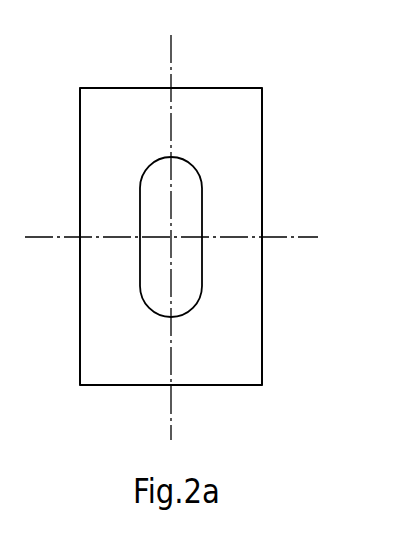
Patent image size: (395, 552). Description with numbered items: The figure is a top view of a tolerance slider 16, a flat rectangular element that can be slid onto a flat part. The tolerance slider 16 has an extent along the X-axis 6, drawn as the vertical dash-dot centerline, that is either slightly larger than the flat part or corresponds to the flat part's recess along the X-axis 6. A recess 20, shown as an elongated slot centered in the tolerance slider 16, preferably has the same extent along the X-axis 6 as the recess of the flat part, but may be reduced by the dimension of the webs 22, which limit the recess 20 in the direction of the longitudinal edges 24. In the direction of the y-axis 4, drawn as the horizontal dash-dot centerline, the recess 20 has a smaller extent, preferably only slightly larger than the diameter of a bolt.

The tolerance slider 16 is at (245, 62).
The recess 20 is at (183, 260).
The webs 22 is at (150, 114).
The longitudinal edges 24 is at (107, 86).
The y-axis 4 is at (302, 232).
The X-axis 6 is at (172, 50).